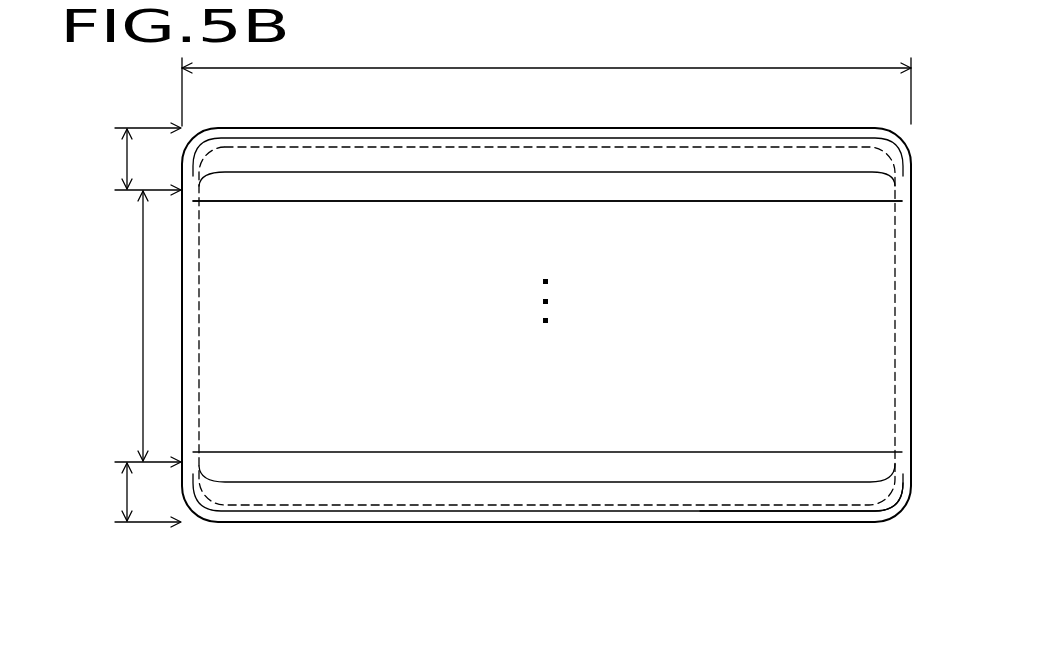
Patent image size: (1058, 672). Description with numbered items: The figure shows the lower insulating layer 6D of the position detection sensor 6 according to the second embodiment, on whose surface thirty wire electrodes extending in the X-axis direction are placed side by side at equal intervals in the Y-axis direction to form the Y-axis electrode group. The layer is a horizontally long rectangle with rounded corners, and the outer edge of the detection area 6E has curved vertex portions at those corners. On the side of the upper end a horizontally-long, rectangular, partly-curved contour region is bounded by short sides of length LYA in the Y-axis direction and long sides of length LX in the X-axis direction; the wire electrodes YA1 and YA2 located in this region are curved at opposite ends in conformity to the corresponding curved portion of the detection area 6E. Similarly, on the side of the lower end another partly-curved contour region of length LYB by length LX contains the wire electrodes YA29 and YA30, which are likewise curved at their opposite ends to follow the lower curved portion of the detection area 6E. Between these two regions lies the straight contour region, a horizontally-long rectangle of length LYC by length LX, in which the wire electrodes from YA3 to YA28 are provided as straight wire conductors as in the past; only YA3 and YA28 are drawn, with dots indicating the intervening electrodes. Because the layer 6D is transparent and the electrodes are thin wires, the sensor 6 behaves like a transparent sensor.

The position detection sensor 6 is at (563, 576).
The insulating layer 6D is at (431, 523).
The detection area 6E is at (588, 506).
The wire electrode YA1 is at (556, 140).
The wire electrode YA2 is at (699, 172).
The wire electrode YA3 is at (678, 203).
The wire electrode YA28 is at (630, 451).
The wire electrode YA29 is at (715, 483).
The wire electrode YA30 is at (788, 512).
The length in the X-axis direction LX is at (546, 84).
The length in the Y-axis direction LYA is at (113, 168).
The length in the Y-axis direction LYB is at (113, 497).
The length in the Y-axis direction LYC is at (120, 326).